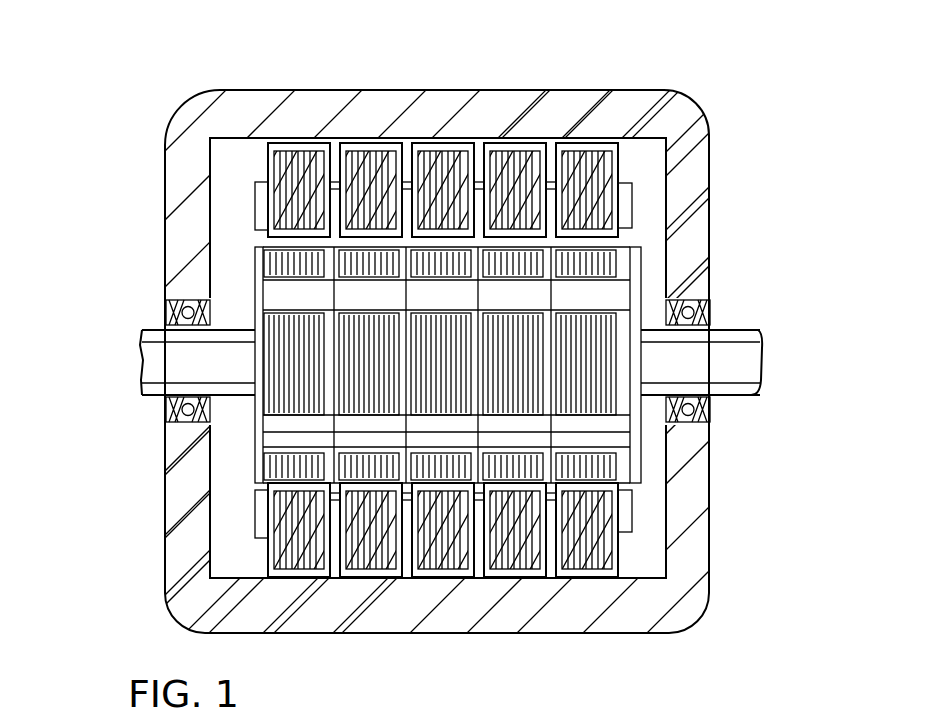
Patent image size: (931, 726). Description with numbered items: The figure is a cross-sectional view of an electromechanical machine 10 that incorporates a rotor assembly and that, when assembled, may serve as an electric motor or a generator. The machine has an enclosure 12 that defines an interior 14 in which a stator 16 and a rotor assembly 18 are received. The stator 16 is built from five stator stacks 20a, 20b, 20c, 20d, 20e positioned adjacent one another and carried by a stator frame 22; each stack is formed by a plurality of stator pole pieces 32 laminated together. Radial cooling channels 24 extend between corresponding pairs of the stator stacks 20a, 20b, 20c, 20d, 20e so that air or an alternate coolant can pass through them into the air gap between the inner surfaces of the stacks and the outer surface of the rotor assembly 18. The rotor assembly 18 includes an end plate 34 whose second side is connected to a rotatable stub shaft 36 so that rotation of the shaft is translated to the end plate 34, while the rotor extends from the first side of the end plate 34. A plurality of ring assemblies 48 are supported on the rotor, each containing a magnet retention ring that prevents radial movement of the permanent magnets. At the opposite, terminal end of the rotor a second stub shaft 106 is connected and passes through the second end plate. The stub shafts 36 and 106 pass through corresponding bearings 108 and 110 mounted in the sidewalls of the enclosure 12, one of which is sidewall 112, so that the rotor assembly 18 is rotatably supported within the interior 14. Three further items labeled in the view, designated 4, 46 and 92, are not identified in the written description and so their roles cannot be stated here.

The terminal bracket 4 is at (268, 208).
The electromechanical machine 10 is at (702, 608).
The enclosure 12 is at (440, 112).
The interior 14 is at (645, 172).
The stator 16 is at (379, 580).
The rotor assembly 18 is at (640, 455).
The stator stack 20a is at (285, 150).
The stator stack 20b is at (358, 148).
The stator stack 20c is at (442, 148).
The stator stack 20d is at (522, 148).
The stator stack 20e is at (620, 148).
The stator frame 22 is at (636, 212).
The radial cooling channels 24 is at (333, 148).
The stator pole pieces 32 is at (636, 190).
The end plate 34 is at (640, 433).
The stub shaft 36 is at (740, 338).
The magnet carrier 46 is at (486, 722).
The ring assemblies 48 is at (314, 294).
The spacer 92 is at (559, 714).
The stub shaft 106 is at (175, 352).
The bearing 108 is at (707, 406).
The bearing 110 is at (165, 408).
The sidewall 112 is at (181, 232).